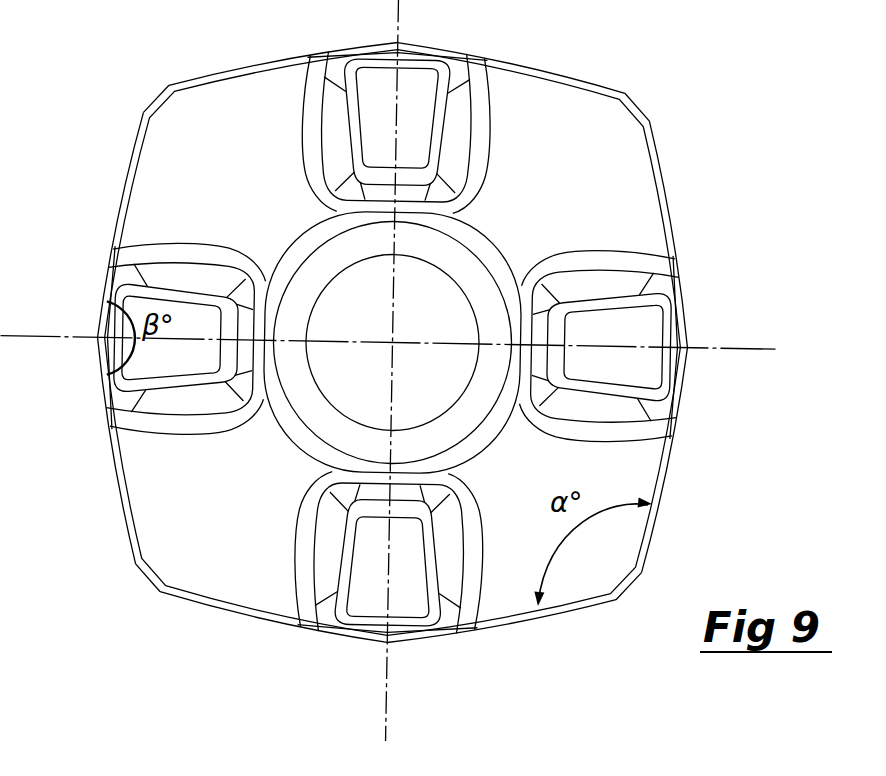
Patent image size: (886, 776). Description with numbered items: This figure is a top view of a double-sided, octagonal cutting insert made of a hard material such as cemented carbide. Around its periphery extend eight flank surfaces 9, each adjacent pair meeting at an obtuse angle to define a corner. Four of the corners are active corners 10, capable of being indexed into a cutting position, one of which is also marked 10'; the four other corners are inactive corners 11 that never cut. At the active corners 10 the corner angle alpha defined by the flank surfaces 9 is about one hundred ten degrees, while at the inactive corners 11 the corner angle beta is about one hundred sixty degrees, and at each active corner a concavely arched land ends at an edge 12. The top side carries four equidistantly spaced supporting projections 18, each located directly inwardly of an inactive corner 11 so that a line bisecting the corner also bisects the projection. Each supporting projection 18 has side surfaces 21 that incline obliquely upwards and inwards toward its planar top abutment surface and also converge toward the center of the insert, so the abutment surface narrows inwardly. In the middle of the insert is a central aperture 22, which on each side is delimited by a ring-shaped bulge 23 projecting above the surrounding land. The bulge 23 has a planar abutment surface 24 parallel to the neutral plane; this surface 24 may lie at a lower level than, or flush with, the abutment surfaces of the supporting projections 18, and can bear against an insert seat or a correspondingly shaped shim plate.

The flank surface 9 is at (117, 214).
The active corner 10 is at (395, 363).
The corner 10' is at (136, 66).
The inactive corner 11 is at (416, 32).
The edge 12 is at (197, 612).
The supporting projection 18 is at (438, 130).
The side surface 21 is at (320, 556).
The central aperture 22 is at (354, 380).
The ring-shaped bulge 23 is at (299, 238).
The abutment surface 24 is at (478, 272).